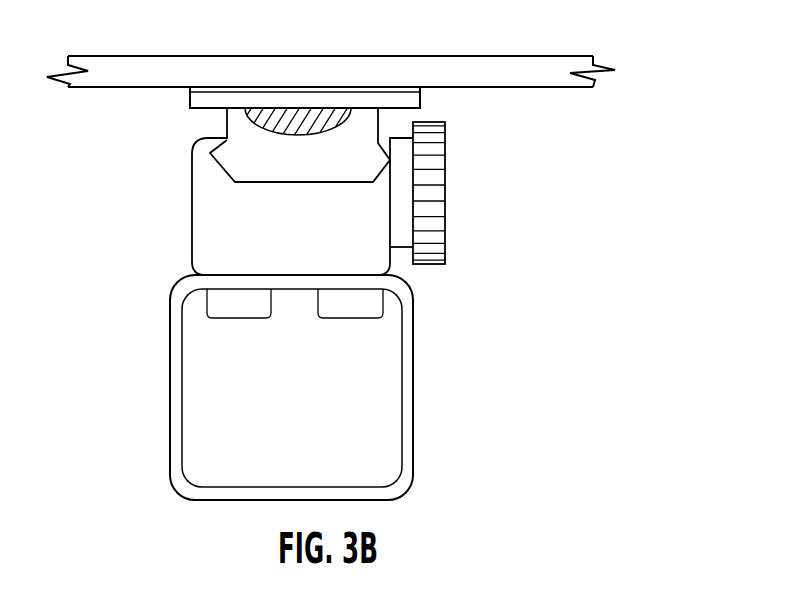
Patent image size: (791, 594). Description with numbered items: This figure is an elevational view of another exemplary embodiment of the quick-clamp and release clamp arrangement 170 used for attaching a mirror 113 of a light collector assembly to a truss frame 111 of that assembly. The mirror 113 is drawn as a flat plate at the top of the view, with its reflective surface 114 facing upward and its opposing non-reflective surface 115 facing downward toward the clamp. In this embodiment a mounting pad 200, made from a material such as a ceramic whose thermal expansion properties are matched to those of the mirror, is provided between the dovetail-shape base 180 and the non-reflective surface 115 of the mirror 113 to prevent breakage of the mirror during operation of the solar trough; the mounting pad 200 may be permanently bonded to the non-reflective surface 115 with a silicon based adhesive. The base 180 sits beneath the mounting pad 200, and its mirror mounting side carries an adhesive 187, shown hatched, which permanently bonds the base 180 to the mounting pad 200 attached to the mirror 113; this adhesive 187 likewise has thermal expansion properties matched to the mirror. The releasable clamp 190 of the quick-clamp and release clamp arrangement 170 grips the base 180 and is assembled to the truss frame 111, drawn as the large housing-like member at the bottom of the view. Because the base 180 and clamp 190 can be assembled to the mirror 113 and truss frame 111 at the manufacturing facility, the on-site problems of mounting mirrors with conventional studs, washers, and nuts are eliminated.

The truss frame 111 is at (413, 402).
The mirror 113 is at (597, 82).
The reflective surface 114 is at (488, 57).
The non-reflective surface 115 is at (98, 88).
The quick-clamp and release clamp arrangement 170 is at (168, 229).
The dovetail-shape base 180 is at (245, 133).
The adhesive 187 is at (320, 115).
The releasable clamp 190 is at (390, 266).
The mounting pad 200 is at (422, 97).